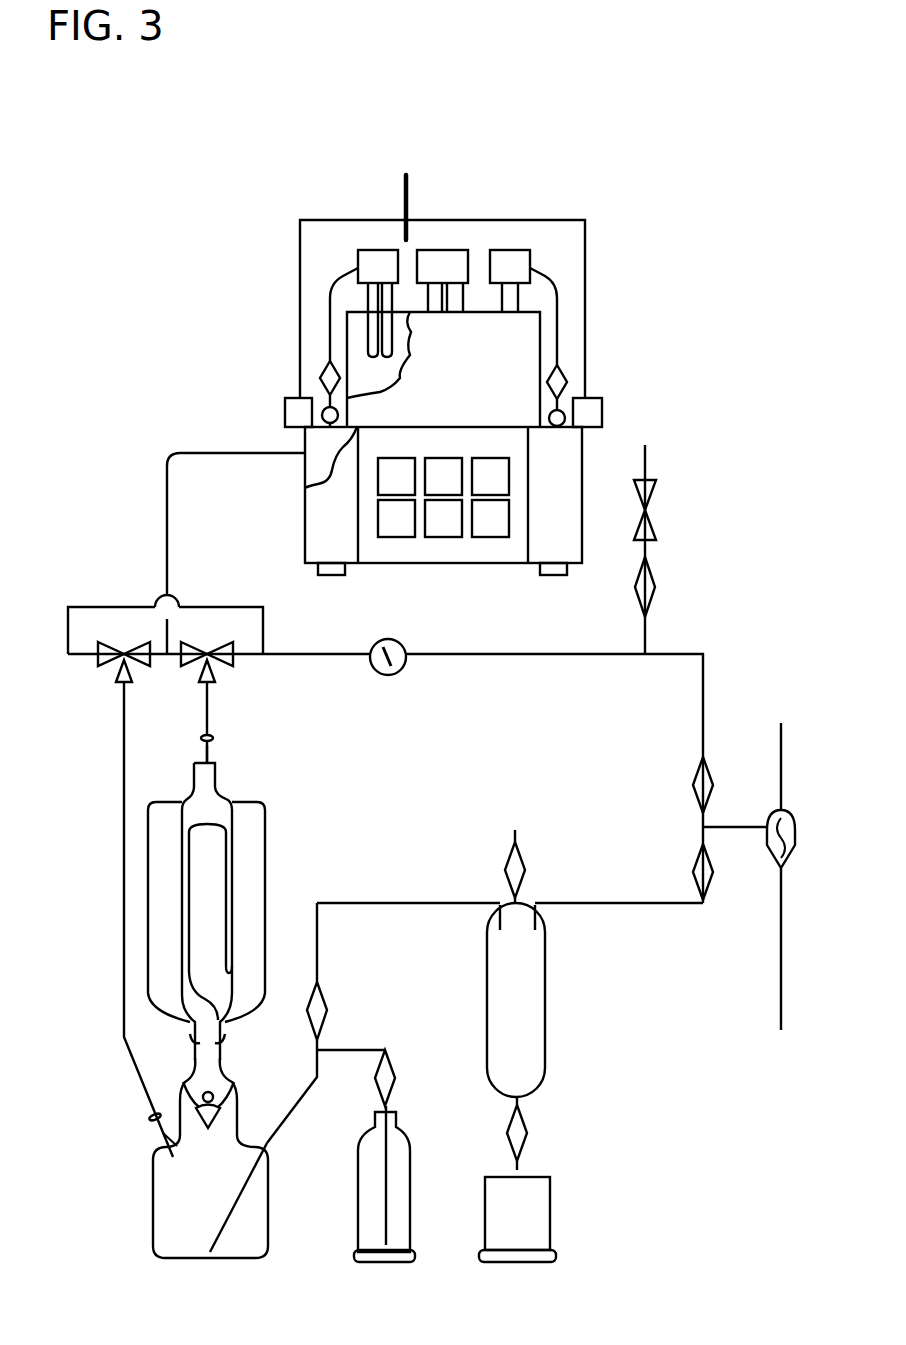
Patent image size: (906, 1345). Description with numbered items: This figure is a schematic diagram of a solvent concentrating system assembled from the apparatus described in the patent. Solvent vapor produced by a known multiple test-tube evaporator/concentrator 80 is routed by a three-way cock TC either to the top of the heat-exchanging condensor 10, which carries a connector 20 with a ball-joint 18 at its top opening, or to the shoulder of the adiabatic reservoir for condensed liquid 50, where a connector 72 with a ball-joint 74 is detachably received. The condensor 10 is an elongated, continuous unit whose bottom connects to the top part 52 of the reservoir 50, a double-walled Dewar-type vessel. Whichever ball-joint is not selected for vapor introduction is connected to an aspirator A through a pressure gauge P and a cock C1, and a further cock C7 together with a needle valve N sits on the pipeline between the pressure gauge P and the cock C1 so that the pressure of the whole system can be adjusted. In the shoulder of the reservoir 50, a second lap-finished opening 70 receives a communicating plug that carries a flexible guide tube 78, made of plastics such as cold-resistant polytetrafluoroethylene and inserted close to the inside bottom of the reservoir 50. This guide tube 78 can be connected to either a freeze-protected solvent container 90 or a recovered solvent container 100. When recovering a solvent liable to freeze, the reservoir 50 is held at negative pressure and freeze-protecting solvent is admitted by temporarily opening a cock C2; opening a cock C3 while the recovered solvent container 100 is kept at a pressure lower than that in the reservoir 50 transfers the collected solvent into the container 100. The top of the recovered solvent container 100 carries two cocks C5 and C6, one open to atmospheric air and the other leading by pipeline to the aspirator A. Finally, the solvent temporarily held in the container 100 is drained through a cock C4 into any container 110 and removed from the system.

The multiple test-tube evaporator/concentrator 80 is at (358, 213).
The three-way cock TC is at (207, 650).
The pressure gauge P is at (398, 674).
The needle valve N is at (657, 512).
The cock C1 is at (713, 779).
The cock C2 is at (395, 1072).
The cock C3 is at (327, 1005).
The cock C4 is at (527, 1125).
The cock C5 is at (713, 875).
The cock C6 is at (525, 862).
The cock C7 is at (656, 583).
The aspirator A is at (785, 812).
The heat-exchanging condensor 10 is at (266, 848).
The ball-joint 18 is at (201, 738).
The connector 20 is at (212, 757).
The top part 52 is at (194, 1041).
The second lap-finished opening 70 is at (258, 1148).
The connector 72 is at (170, 1138).
The ball-joint 74 is at (150, 1119).
The adiabatic reservoir for condensed liquid 50 is at (152, 1195).
The flexible guide tube 78 is at (225, 1228).
The freeze-protected solvent container 90 is at (400, 1228).
The recovered solvent container 100 is at (538, 1030).
The container 110 is at (538, 1224).